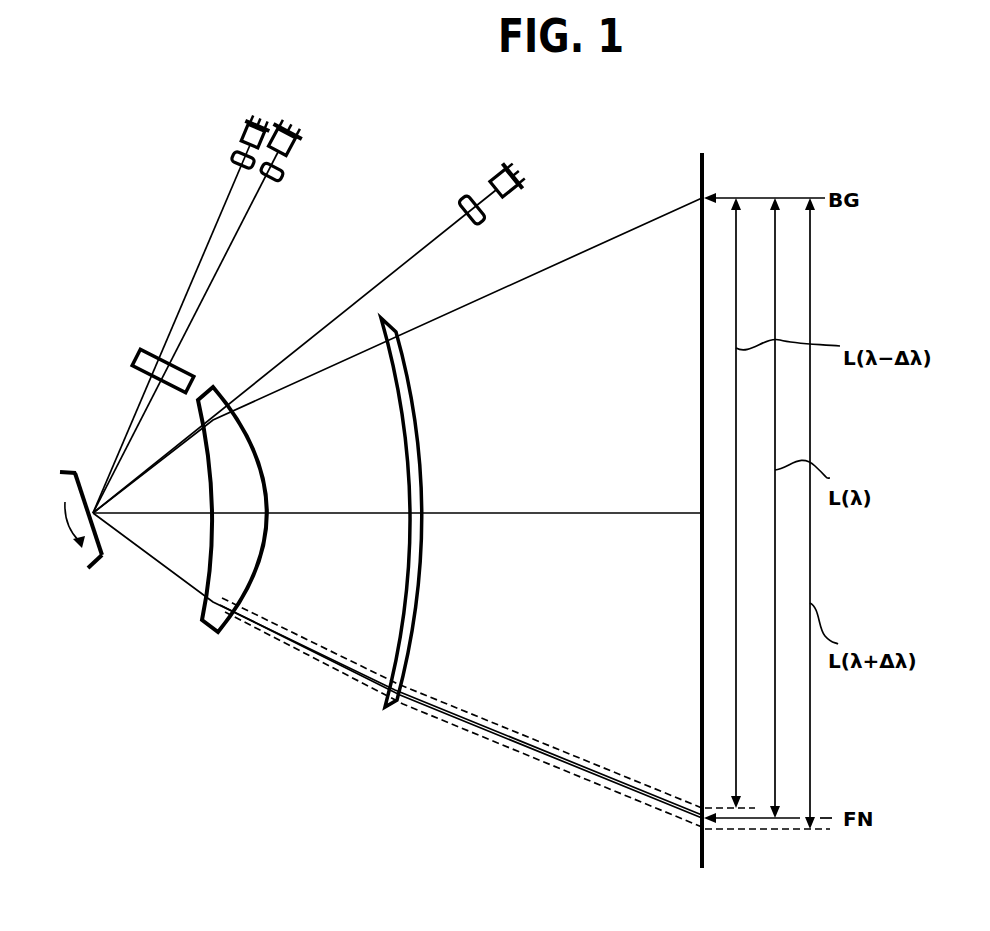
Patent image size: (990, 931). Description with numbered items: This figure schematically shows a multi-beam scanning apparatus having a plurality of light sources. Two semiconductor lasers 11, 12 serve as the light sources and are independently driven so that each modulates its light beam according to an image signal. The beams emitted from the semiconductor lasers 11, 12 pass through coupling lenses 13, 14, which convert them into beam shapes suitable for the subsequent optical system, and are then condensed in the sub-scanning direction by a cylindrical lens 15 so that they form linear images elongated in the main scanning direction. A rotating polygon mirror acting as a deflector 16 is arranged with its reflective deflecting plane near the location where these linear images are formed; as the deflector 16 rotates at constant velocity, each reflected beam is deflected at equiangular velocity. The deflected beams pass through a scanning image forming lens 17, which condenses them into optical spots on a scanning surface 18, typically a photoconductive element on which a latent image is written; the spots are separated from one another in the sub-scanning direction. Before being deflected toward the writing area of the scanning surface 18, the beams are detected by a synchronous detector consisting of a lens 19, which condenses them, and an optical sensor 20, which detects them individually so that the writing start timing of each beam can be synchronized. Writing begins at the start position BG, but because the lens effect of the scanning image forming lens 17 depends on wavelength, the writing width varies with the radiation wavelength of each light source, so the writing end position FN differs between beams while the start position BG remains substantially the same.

The semiconductor laser 11 is at (242, 131).
The semiconductor laser 12 is at (299, 152).
The coupling lens 13 is at (233, 161).
The coupling lens 14 is at (284, 179).
The cylindrical lens 15 is at (150, 356).
The deflector 16 is at (72, 471).
The scanning image forming lens 17 is at (188, 628).
The scanning surface 18 is at (702, 573).
The lens 19 is at (458, 192).
The optical sensor 20 is at (502, 161).